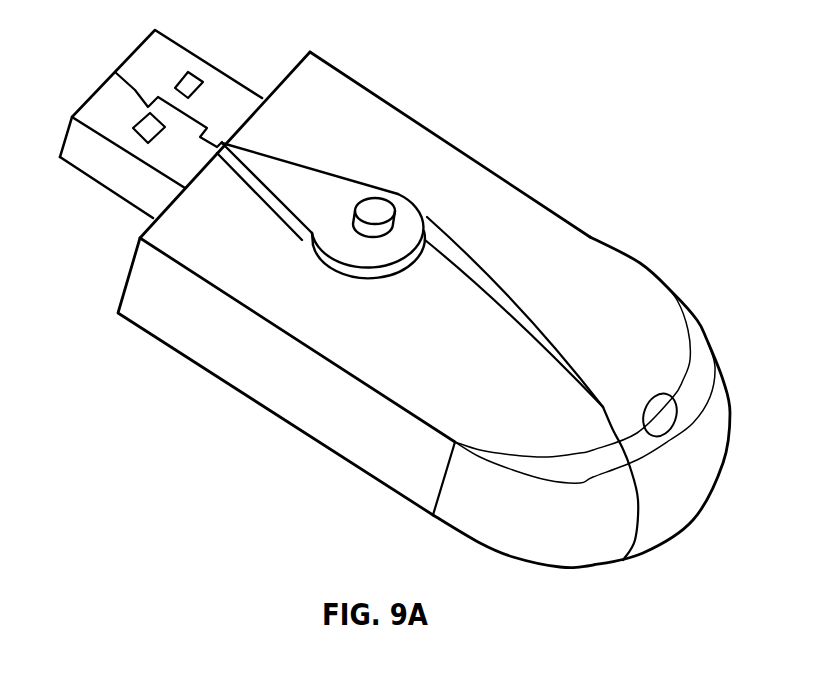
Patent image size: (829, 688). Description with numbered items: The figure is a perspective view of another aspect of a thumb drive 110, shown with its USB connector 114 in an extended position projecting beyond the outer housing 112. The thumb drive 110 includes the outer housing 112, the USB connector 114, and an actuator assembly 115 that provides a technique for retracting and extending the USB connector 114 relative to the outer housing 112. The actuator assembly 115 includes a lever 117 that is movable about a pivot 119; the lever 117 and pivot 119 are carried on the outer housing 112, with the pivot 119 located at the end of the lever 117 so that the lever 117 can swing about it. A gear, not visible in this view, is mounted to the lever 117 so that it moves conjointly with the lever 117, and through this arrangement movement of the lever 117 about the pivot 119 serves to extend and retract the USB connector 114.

The thumb drive 110 is at (626, 80).
The outer housing 112 is at (317, 90).
The USB connector 114 is at (152, 55).
The actuator assembly 115 is at (278, 182).
The lever 117 is at (335, 192).
The pivot 119 is at (373, 213).